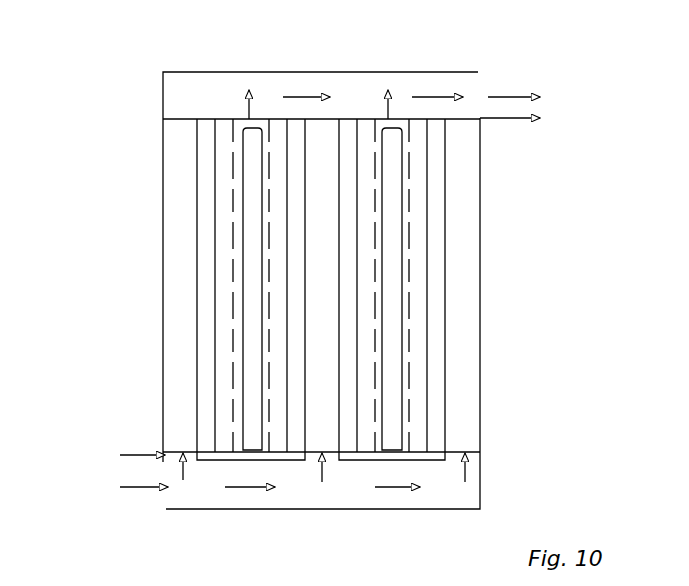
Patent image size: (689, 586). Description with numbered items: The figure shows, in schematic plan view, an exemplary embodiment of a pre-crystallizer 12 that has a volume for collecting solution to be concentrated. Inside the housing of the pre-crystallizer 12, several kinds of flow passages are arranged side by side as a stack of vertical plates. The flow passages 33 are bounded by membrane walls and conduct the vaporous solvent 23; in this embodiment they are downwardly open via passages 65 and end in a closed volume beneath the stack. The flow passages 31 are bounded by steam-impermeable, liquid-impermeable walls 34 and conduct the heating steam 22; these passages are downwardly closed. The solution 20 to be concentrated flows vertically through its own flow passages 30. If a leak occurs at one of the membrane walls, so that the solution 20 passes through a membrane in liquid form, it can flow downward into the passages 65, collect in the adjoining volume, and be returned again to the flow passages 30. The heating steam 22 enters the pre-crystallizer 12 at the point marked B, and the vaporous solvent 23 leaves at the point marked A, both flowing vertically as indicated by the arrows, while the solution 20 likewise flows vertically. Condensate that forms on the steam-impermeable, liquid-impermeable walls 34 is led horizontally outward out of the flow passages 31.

The pre-crystallizer 12 is at (93, 91).
The solution to be concentrated 20 is at (122, 452).
The heating steam 22 is at (120, 489).
The vaporous solvent 23 is at (421, 92).
The flow passages 30 is at (412, 227).
The flow passages 31 is at (462, 263).
The flow passages 33 is at (392, 302).
The steam-impermeable, liquid-impermeable walls 34 is at (455, 432).
The passages 65 is at (250, 333).